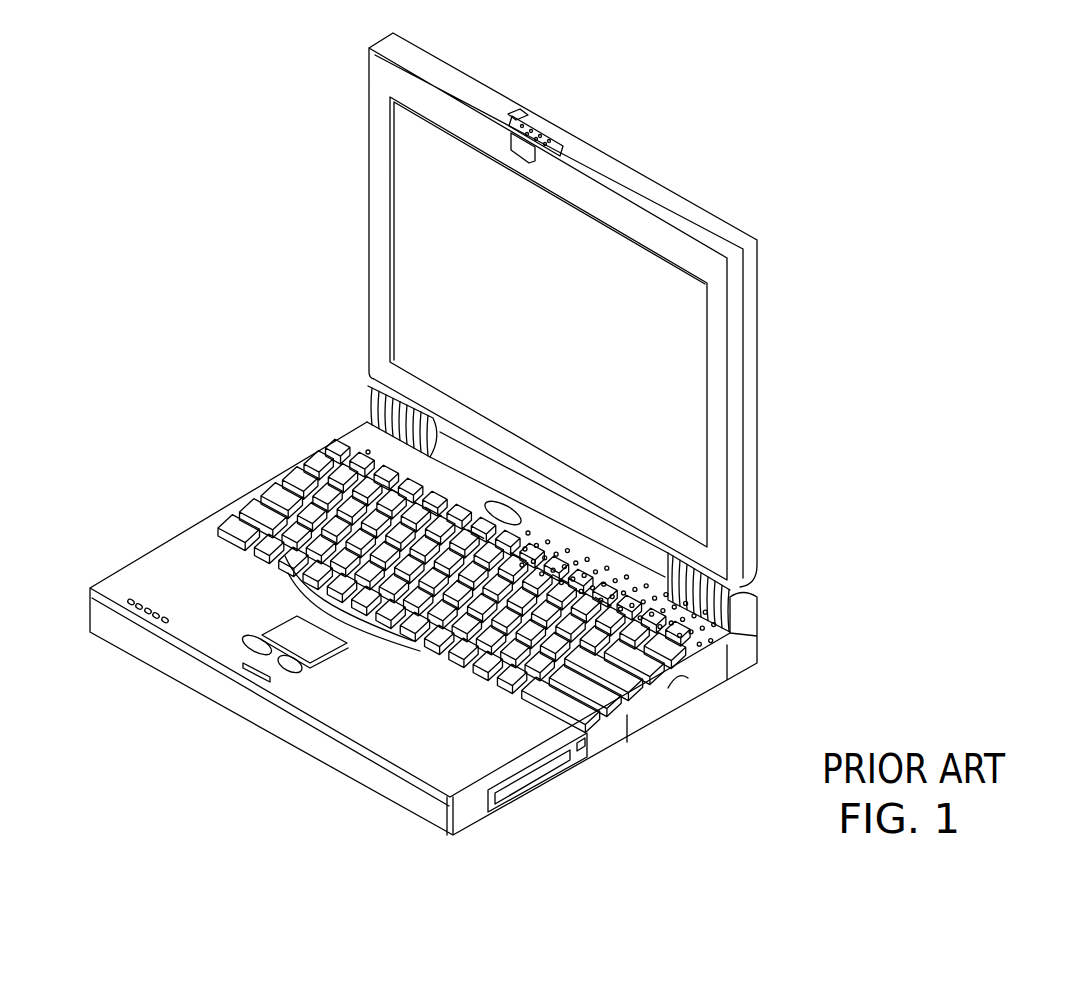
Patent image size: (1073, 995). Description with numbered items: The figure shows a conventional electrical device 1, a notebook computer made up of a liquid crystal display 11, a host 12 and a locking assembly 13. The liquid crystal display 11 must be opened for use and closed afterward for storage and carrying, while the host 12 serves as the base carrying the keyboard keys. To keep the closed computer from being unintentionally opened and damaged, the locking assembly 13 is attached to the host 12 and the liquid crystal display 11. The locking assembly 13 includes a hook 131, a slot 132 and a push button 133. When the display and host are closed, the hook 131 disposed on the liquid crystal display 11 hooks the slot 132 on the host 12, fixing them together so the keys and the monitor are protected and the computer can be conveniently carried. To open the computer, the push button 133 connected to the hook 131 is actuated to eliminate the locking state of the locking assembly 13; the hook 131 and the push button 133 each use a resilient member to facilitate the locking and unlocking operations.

The electrical device 1 is at (80, 141).
The liquid crystal display 11 is at (293, 150).
The host 12 is at (660, 753).
The locking assembly 13 is at (995, 230).
The hook 131 is at (592, 163).
The slot 132 is at (257, 670).
The push button 133 is at (531, 132).